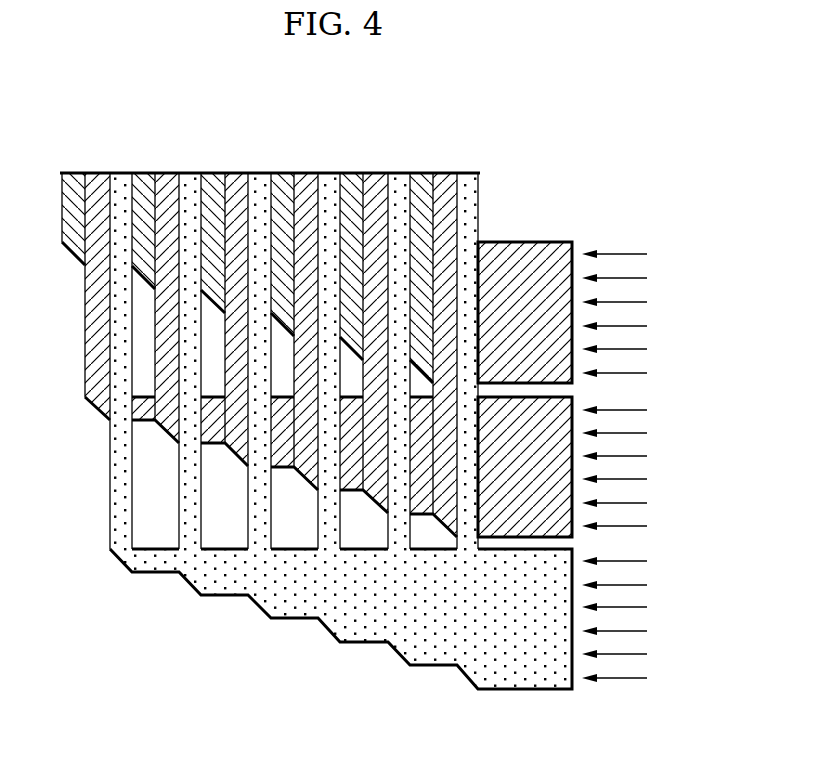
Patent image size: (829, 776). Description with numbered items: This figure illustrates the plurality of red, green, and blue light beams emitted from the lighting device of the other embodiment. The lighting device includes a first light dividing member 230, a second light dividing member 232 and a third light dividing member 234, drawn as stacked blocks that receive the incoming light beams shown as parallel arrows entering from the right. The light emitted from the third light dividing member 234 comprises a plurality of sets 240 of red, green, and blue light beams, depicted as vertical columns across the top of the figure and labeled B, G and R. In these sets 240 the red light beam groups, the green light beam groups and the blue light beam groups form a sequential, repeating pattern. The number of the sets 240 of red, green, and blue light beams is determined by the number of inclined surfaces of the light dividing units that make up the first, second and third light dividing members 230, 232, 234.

The first light dividing member 230 is at (553, 690).
The second light dividing member 232 is at (573, 402).
The third light dividing member 234 is at (559, 240).
The sets of red, green, and blue light beams 240 is at (268, 123).